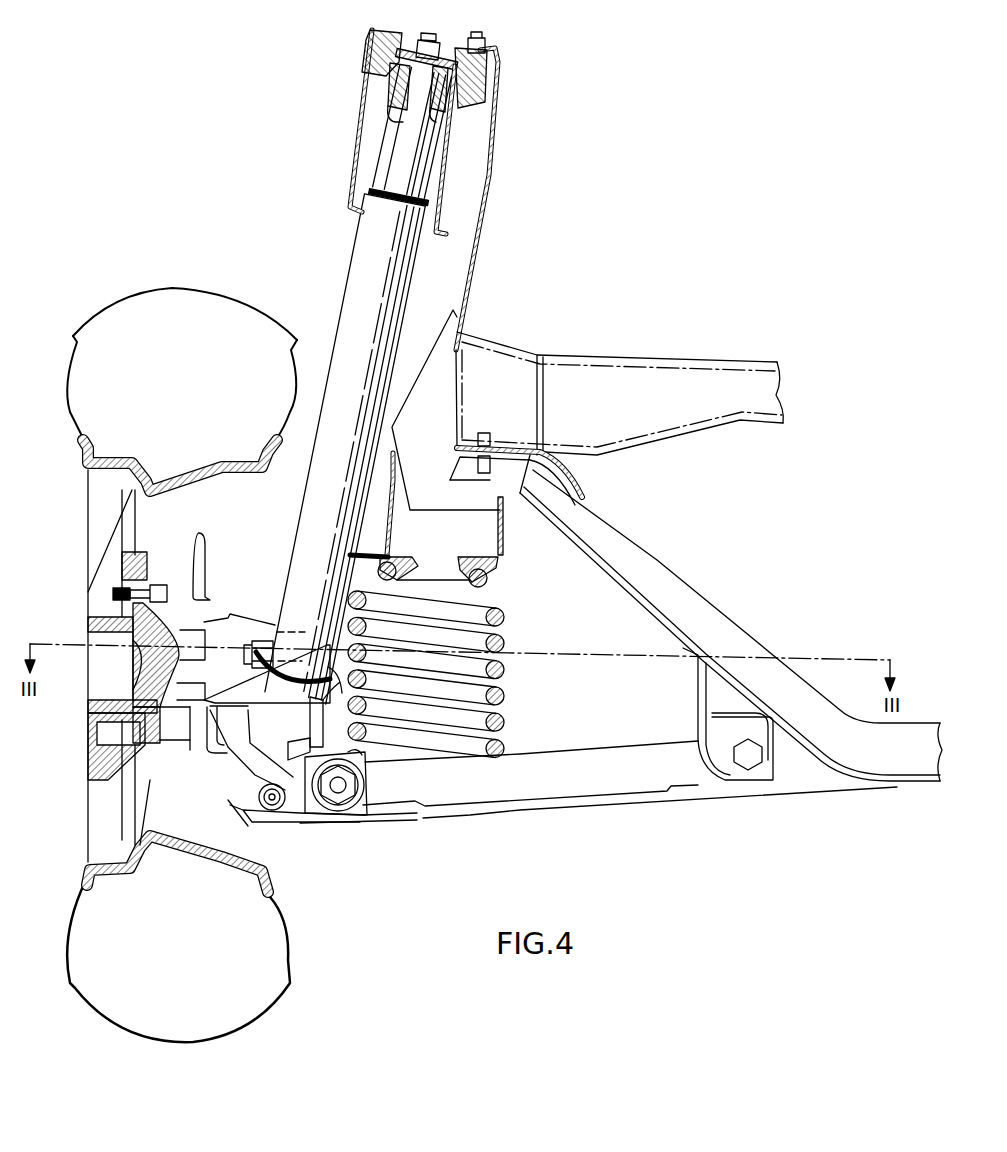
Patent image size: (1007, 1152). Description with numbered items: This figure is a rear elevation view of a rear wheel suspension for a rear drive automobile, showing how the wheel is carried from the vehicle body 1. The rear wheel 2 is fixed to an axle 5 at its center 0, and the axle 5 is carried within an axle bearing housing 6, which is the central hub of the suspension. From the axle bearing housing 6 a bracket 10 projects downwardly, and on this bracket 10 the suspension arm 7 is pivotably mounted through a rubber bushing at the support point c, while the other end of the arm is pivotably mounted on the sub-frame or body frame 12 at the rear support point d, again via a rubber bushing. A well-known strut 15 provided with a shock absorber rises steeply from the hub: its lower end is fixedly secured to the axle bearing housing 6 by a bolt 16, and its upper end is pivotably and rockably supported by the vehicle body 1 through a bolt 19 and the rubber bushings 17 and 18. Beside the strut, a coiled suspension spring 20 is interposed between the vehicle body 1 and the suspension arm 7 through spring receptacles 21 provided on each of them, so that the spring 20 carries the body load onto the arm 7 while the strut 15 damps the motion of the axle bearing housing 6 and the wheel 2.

The center of the rear wheel 0 is at (108, 668).
The vehicle body 1 is at (488, 184).
The rear wheel 2 is at (168, 292).
The axle 5 is at (193, 658).
The axle bearing housing 6 is at (232, 682).
The suspension arm 7 is at (634, 772).
The bracket 10 is at (246, 758).
The sub-frame or body frame 12 is at (722, 642).
The strut 15 is at (364, 260).
The bolt 16 is at (322, 728).
The rubber bushing 17 is at (390, 106).
The rubber bushing 18 is at (366, 62).
The bolt 19 is at (424, 46).
The coiled suspension spring 20 is at (506, 618).
The spring receptacles 21 is at (492, 566).
The support point c is at (340, 795).
The rear support point d is at (748, 764).